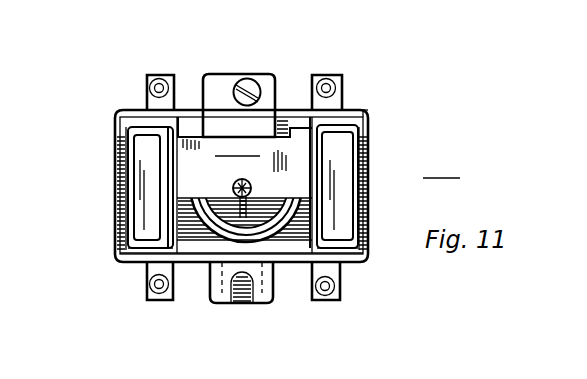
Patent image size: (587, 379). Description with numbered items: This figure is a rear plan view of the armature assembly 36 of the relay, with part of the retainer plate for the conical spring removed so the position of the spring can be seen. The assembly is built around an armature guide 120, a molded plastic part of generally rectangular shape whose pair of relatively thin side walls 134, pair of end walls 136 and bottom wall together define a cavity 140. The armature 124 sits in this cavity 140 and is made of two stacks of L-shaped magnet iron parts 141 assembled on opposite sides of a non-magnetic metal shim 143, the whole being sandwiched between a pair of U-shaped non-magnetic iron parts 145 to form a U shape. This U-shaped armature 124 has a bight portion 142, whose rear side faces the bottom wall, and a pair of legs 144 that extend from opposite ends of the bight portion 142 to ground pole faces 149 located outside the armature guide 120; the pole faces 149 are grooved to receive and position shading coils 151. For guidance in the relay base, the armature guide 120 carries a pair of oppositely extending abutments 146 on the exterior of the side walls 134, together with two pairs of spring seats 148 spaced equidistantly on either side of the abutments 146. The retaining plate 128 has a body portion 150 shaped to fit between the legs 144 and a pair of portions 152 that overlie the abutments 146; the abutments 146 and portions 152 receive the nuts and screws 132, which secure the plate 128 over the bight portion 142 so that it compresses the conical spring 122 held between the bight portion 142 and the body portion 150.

The armature assembly 36 is at (373, 173).
The armature guide 120 is at (370, 118).
The conical spring 122 is at (216, 232).
The armature 124 is at (118, 198).
The retaining plate 128 is at (263, 110).
The nuts and screws 132 is at (255, 73).
The side walls 134 is at (186, 75).
The end walls 136 is at (118, 225).
The cavity 140 is at (361, 113).
The L-shaped magnet iron parts 141 is at (113, 250).
The bight portion 142 is at (210, 215).
The non-magnetic metal shim 143 is at (252, 190).
The legs 144 is at (117, 170).
The U-shaped non-magnetic iron parts 145 is at (370, 113).
The abutments 146 is at (205, 115).
The spring seats 148 is at (147, 88).
The pole faces 149 is at (115, 147).
The body portion 150 is at (238, 145).
The shading coils 151 is at (120, 245).
The portions 152 is at (273, 70).